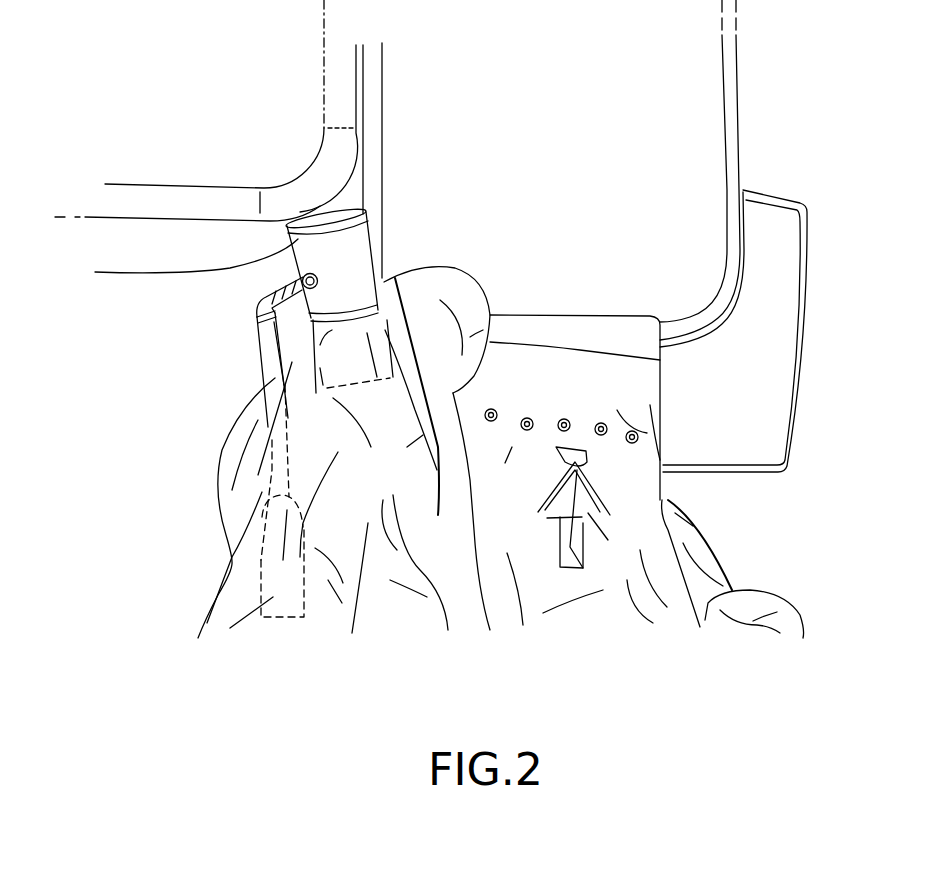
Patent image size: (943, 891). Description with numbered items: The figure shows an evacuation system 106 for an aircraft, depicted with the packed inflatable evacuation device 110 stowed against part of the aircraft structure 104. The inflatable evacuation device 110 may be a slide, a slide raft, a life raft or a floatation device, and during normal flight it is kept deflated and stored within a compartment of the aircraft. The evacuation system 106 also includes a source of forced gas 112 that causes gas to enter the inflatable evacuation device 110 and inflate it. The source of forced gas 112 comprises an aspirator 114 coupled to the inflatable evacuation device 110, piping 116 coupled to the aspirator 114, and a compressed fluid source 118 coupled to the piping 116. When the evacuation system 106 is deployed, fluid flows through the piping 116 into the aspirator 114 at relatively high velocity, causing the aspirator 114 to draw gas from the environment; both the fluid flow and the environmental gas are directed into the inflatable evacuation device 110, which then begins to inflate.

The seat frame / side panel 104 is at (740, 65).
The evacuation system 106 is at (98, 414).
The inflatable evacuation device 110 is at (465, 610).
The source of forced gas 112 is at (319, 198).
The aspirator 114 is at (363, 262).
The piping 116 is at (259, 340).
The compressed fluid source 118 is at (265, 617).